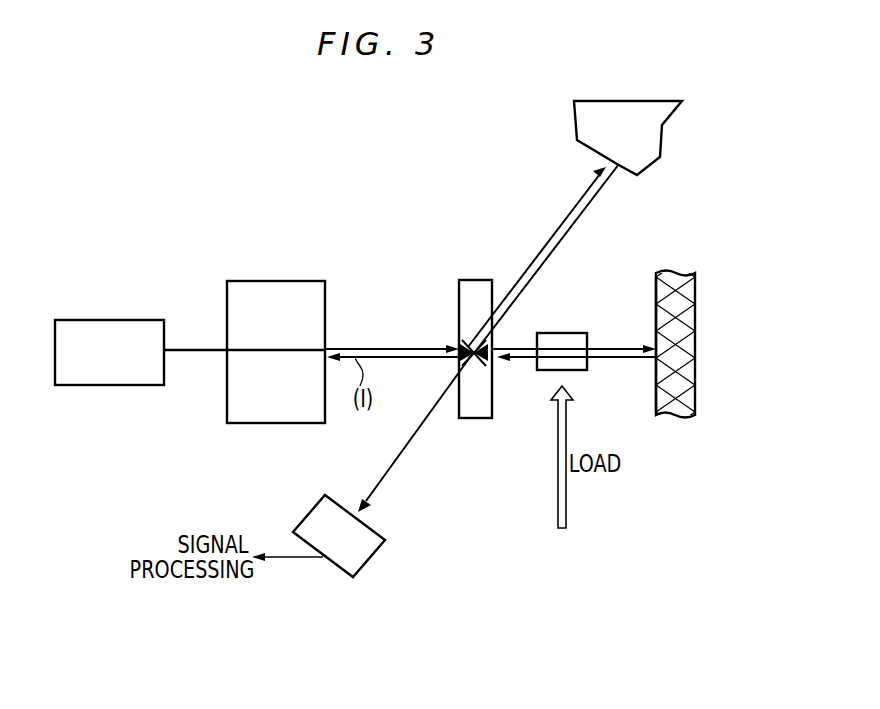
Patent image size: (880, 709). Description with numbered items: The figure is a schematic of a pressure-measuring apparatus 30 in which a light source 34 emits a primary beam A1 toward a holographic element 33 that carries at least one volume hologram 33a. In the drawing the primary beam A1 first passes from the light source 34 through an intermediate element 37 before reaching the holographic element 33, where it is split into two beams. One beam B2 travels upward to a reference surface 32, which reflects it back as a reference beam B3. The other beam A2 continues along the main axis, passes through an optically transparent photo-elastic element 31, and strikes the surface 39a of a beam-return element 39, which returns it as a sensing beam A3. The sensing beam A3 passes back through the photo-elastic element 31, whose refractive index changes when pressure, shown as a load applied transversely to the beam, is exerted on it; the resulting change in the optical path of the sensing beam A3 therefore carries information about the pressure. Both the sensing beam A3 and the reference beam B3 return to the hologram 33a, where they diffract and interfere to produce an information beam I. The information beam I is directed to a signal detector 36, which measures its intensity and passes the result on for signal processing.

The apparatus 30 is at (216, 131).
The photo-elastic element 31 is at (558, 333).
The reference surface 32 is at (617, 160).
The holographic element 33 is at (473, 284).
The volume hologram 33a is at (465, 356).
The light source 34 is at (104, 326).
The signal detector 36 is at (370, 560).
The beam expander 37 is at (274, 290).
The beam-return surface 39 is at (697, 313).
The surface of the beam-return element 39a is at (656, 312).
The primary beam A1 is at (388, 348).
The beam A2 is at (523, 348).
The sensing beam A3 is at (516, 358).
The beam B2 is at (558, 222).
The reference beam B3 is at (587, 212).
The information beam I is at (410, 447).